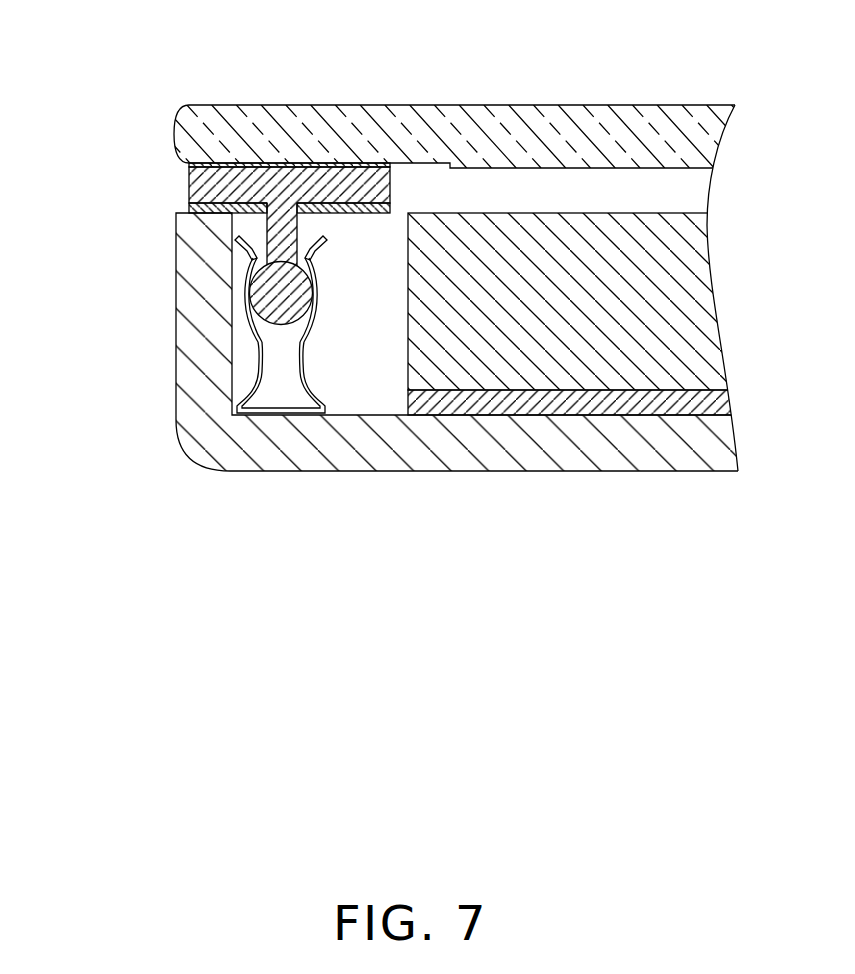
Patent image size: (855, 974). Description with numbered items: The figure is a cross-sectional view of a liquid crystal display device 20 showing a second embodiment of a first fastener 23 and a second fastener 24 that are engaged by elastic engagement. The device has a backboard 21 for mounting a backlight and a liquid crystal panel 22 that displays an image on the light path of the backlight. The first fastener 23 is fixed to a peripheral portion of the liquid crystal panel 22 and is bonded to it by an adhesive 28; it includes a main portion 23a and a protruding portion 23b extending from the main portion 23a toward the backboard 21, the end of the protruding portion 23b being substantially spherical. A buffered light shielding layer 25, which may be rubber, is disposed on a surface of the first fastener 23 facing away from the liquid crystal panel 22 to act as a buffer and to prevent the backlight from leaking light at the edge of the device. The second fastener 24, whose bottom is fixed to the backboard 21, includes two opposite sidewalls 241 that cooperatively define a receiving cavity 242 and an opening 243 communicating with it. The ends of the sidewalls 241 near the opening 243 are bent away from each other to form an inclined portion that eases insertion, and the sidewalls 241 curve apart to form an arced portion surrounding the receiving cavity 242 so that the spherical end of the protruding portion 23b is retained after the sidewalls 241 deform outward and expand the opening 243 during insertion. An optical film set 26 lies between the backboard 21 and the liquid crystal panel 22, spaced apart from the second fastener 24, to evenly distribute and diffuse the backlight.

The liquid crystal display device 20 is at (461, 69).
The backboard 21 is at (188, 408).
The liquid crystal panel 22 is at (562, 124).
The first fastener 23 is at (216, 238).
The main portion 23a is at (220, 183).
The protruding portion 23b is at (198, 208).
The second fastener 24 is at (185, 322).
The sidewalls 241 is at (247, 294).
The receiving cavity 242 is at (278, 335).
The opening 243 is at (259, 239).
The buffered light shielding layer 25 is at (293, 280).
The optical film set 26 is at (688, 313).
The adhesive 28 is at (232, 155).